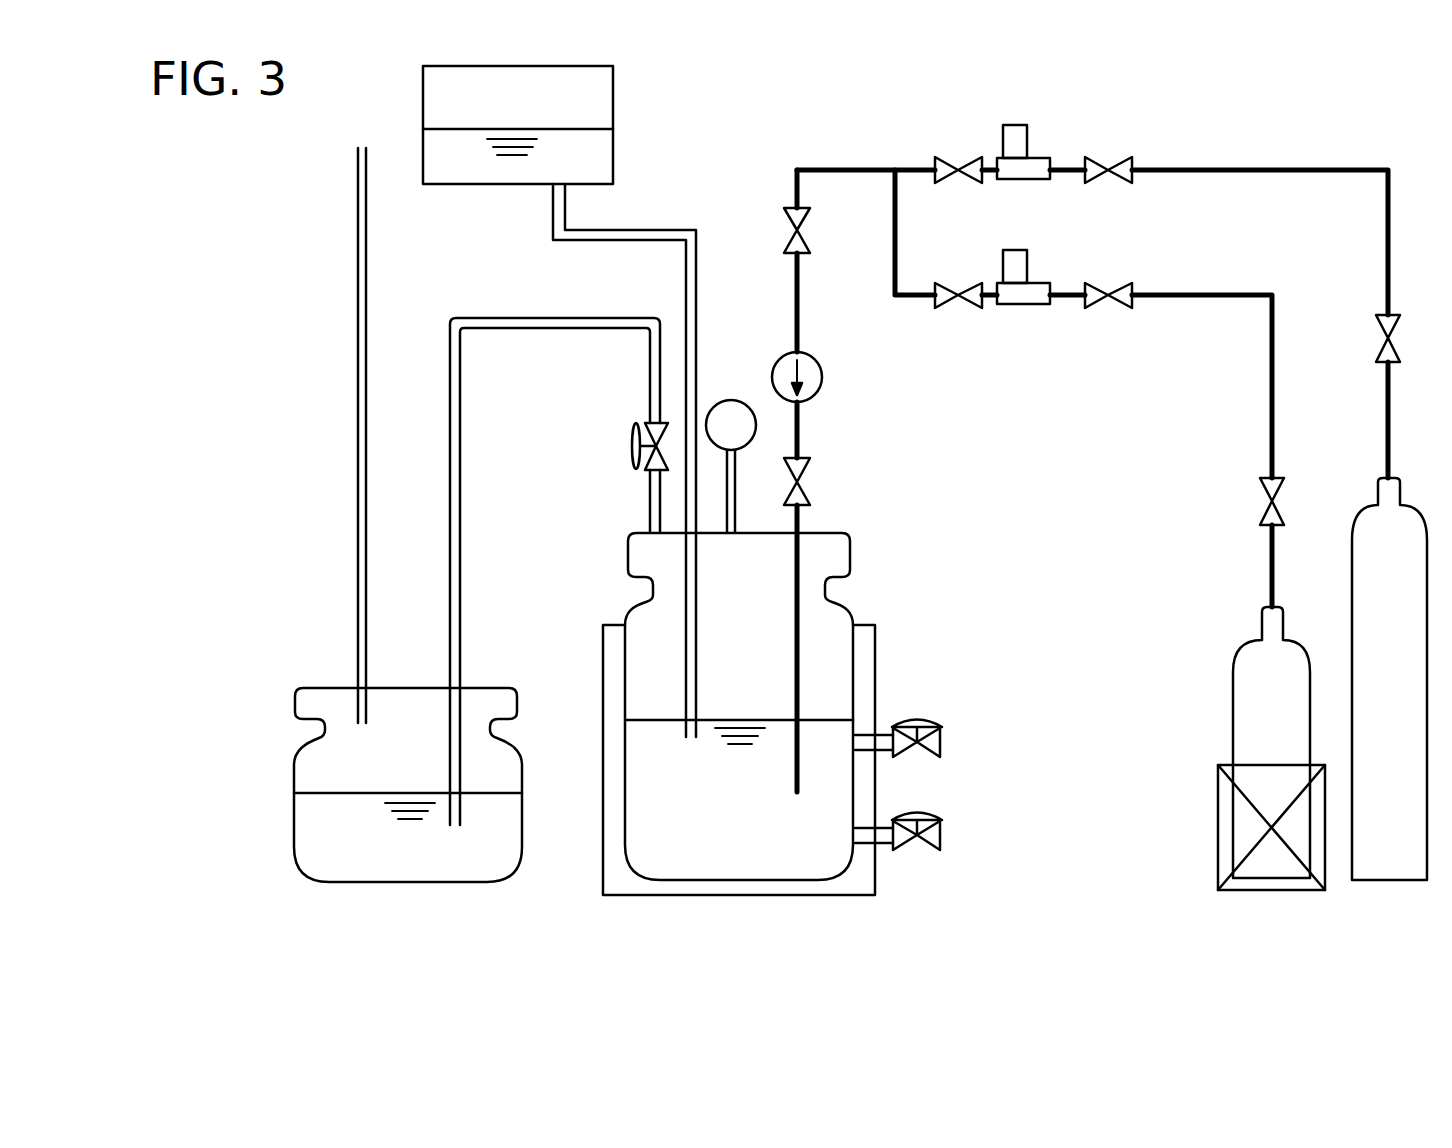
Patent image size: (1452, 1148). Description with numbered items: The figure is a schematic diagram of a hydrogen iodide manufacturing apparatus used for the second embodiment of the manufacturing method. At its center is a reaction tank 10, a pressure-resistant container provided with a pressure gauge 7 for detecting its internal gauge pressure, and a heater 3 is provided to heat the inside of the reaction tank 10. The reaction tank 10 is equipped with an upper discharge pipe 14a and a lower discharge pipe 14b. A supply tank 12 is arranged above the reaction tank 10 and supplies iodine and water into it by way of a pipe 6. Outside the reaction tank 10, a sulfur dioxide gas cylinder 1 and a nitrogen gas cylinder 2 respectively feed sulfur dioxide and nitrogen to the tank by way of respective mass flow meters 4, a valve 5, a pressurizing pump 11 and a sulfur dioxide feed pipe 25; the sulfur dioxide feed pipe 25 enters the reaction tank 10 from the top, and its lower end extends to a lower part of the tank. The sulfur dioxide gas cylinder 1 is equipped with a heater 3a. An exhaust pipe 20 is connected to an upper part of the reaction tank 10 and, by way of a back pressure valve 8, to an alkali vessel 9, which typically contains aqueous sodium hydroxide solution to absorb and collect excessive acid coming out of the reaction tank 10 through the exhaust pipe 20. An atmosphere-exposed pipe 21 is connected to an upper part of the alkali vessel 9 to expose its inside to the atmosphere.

The sulfur dioxide gas cylinder 1 is at (1240, 708).
The nitrogen gas cylinder 2 is at (1378, 875).
The heater 3 is at (633, 880).
The heater 3a is at (1222, 826).
The mass flow meter 4 is at (1047, 157).
The valve 5 is at (808, 217).
The pipe 6 is at (632, 230).
The pressure gauge 7 is at (731, 399).
The back pressure valve 8 is at (632, 447).
The alkali vessel 9 is at (292, 826).
The reaction tank 10 is at (848, 600).
The pressurizing pump 11 is at (822, 374).
The supply tank 12 is at (613, 92).
The upper discharge pipe 14a is at (925, 718).
The lower discharge pipe 14b is at (928, 810).
The exhaust pipe 20 is at (462, 422).
The atmosphere-exposed pipe 21 is at (355, 462).
The sulfur dioxide feed pipe 25 is at (802, 519).